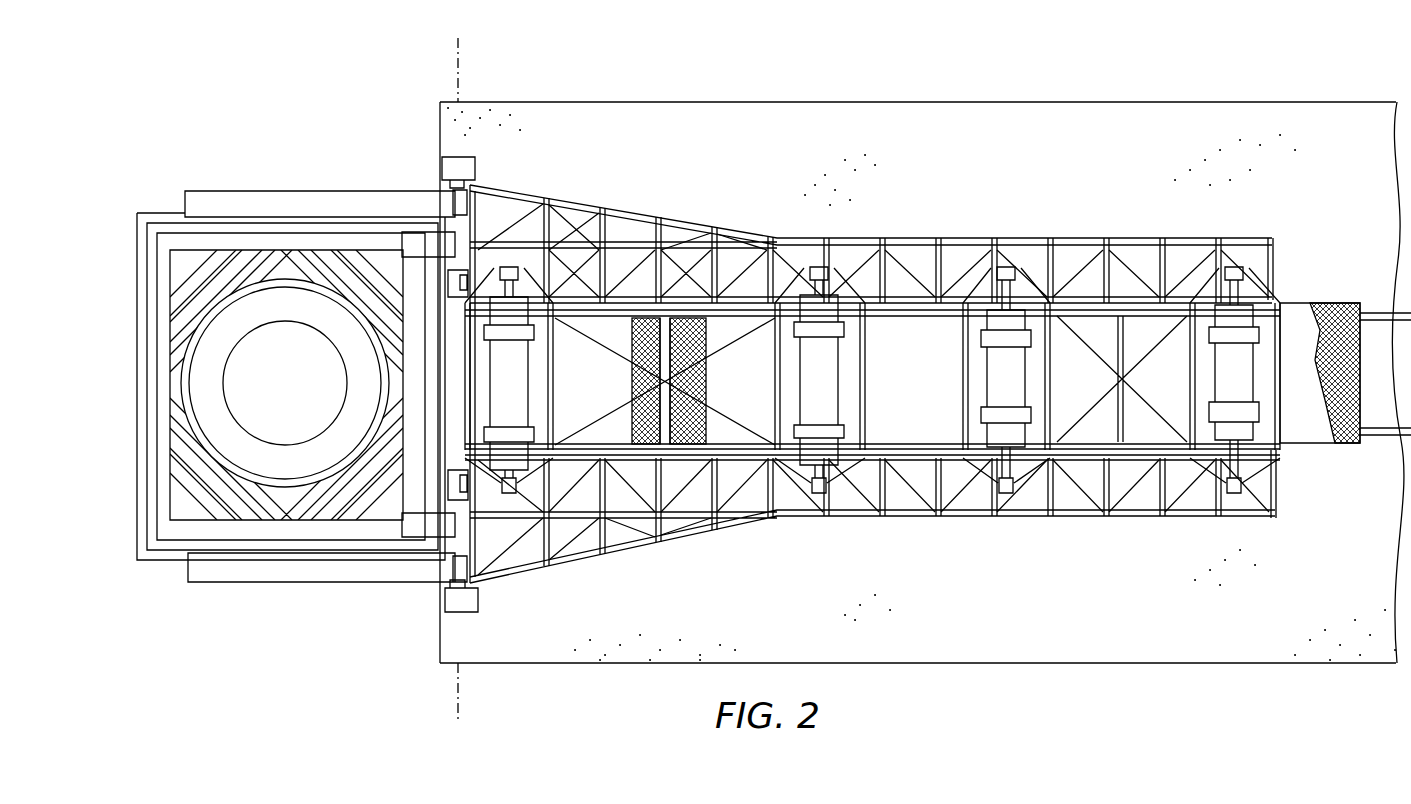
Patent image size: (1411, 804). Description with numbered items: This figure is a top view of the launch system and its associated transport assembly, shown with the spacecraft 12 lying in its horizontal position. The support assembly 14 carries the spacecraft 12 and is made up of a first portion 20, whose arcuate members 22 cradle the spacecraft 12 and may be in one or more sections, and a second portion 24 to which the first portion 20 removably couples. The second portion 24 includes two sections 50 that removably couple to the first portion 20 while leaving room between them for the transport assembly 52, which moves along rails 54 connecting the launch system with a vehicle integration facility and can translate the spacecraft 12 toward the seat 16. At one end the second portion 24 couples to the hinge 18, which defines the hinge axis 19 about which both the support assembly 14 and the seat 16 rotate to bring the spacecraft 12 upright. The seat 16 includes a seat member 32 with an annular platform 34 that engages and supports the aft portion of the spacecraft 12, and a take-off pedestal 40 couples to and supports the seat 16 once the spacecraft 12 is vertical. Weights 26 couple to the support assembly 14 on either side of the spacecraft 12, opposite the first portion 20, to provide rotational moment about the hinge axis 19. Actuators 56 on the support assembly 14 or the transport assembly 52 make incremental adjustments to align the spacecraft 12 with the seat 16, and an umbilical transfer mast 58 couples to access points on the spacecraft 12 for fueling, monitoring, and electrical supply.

The spacecraft 12 is at (271, 397).
The support assembly 14 is at (926, 389).
The seat 16 is at (299, 398).
The hinge 18 is at (479, 599).
The hinge axis 19 is at (457, 46).
The first portion 20 is at (1291, 270).
The arcuate members 22 is at (836, 368).
The second portion 24 is at (818, 519).
The weights 26 is at (350, 190).
The seat member 32 is at (175, 541).
The annular platform 34 is at (289, 281).
The take-off pedestal 40 is at (156, 214).
The sections 50 is at (1085, 239).
The transport assembly 52 is at (718, 392).
The rails 54 is at (1380, 308).
The actuators 56 is at (524, 430).
The umbilical transfer mast 58 is at (918, 446).